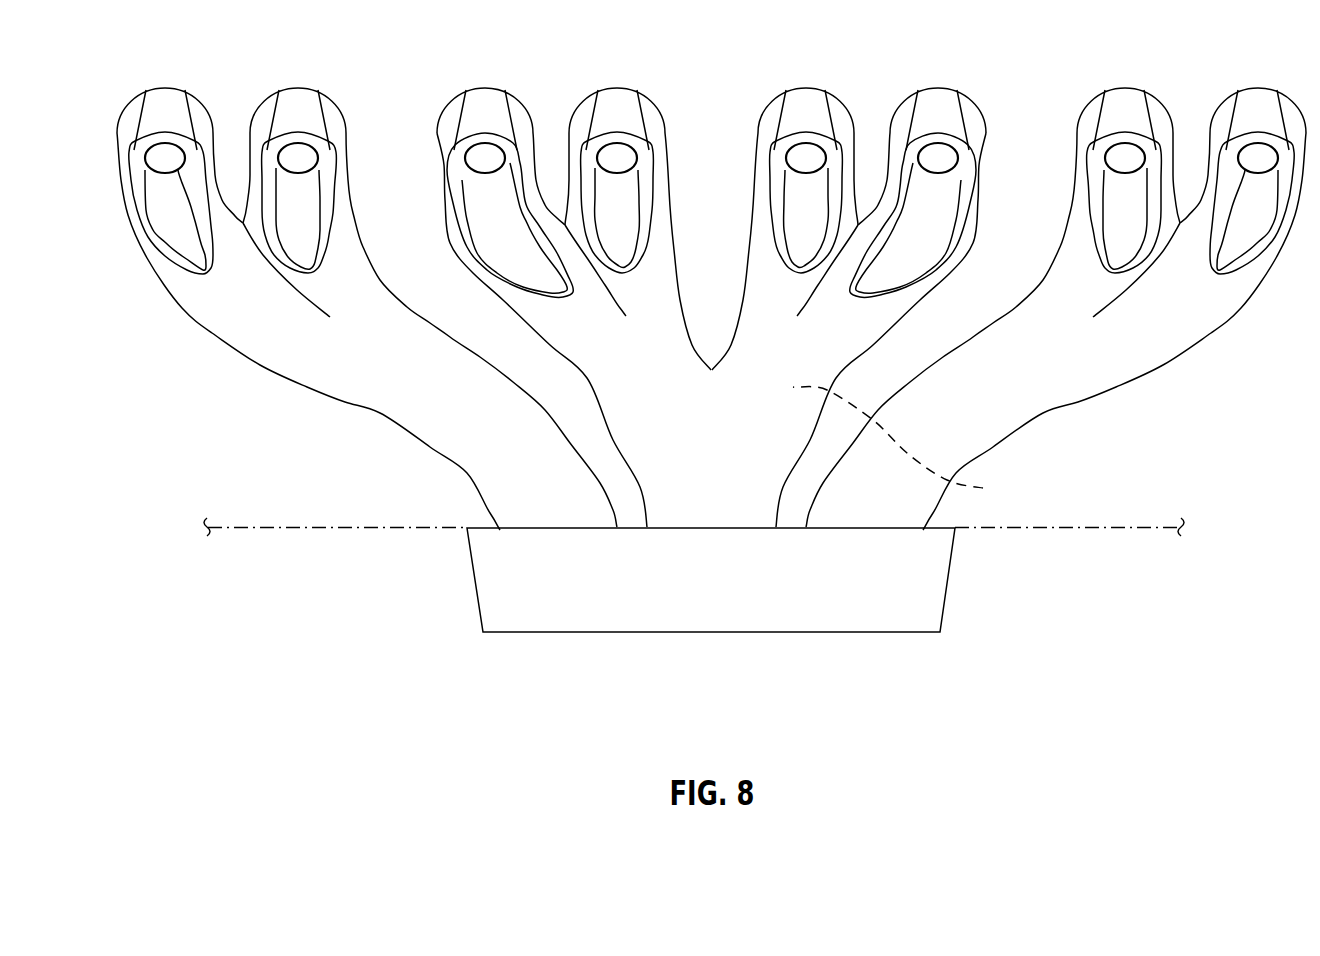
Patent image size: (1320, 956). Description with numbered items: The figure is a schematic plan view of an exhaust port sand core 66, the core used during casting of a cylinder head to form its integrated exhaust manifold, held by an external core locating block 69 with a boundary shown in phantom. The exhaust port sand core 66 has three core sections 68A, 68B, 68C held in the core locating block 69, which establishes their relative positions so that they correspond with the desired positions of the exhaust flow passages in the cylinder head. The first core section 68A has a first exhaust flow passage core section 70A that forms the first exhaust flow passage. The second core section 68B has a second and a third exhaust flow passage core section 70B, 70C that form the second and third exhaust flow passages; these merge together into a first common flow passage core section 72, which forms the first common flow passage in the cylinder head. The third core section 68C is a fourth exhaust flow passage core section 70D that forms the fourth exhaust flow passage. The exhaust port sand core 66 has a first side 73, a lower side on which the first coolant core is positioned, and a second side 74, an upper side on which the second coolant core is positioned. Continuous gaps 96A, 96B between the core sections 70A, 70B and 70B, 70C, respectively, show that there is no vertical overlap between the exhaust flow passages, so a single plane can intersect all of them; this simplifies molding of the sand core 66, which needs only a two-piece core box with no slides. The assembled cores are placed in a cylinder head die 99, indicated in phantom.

The exhaust port sand core 66 is at (168, 410).
The first core section 68A is at (233, 318).
The second core section 68B is at (740, 507).
The third core section 68C is at (1073, 378).
The core locating block 69 is at (950, 577).
The first exhaust flow passage core section 70A is at (365, 309).
The second exhaust flow passage core section 70B is at (647, 410).
The third exhaust flow passage core section 70C is at (863, 320).
The fourth exhaust flow passage core section 70D is at (1056, 309).
The first common flow passage core section 72 is at (678, 507).
The first side 73 is at (905, 447).
The second side 74 is at (590, 381).
The continuous gap 96A is at (547, 380).
The continuous gap 96B is at (920, 352).
The cylinder head die 99 is at (307, 528).